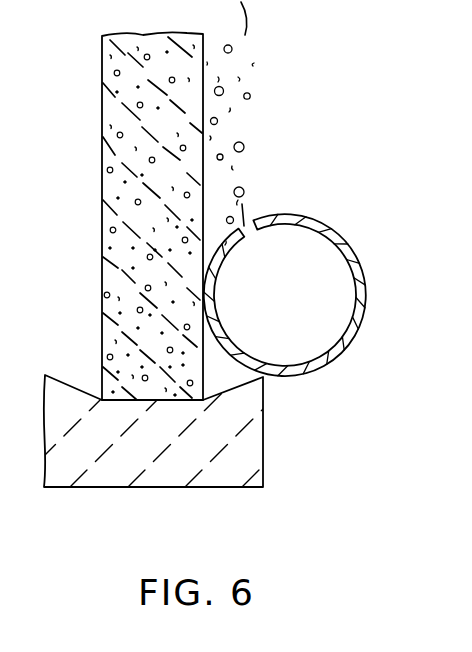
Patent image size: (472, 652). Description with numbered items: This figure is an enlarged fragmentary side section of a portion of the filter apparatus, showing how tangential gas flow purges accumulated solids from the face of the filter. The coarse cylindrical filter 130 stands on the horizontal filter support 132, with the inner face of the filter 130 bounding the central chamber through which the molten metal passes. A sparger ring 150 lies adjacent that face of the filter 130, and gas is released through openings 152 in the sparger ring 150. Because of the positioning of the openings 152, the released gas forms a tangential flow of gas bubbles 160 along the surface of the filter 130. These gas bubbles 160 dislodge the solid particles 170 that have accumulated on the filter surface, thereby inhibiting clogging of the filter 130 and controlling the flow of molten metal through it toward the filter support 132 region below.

The coarse cylindrical filter 130 is at (103, 271).
The horizontal filter support 132 is at (263, 432).
The sparger ring 150 is at (351, 246).
The openings 152 is at (243, 207).
The gas bubbles 160 is at (245, 185).
The solid particles 170 is at (206, 63).